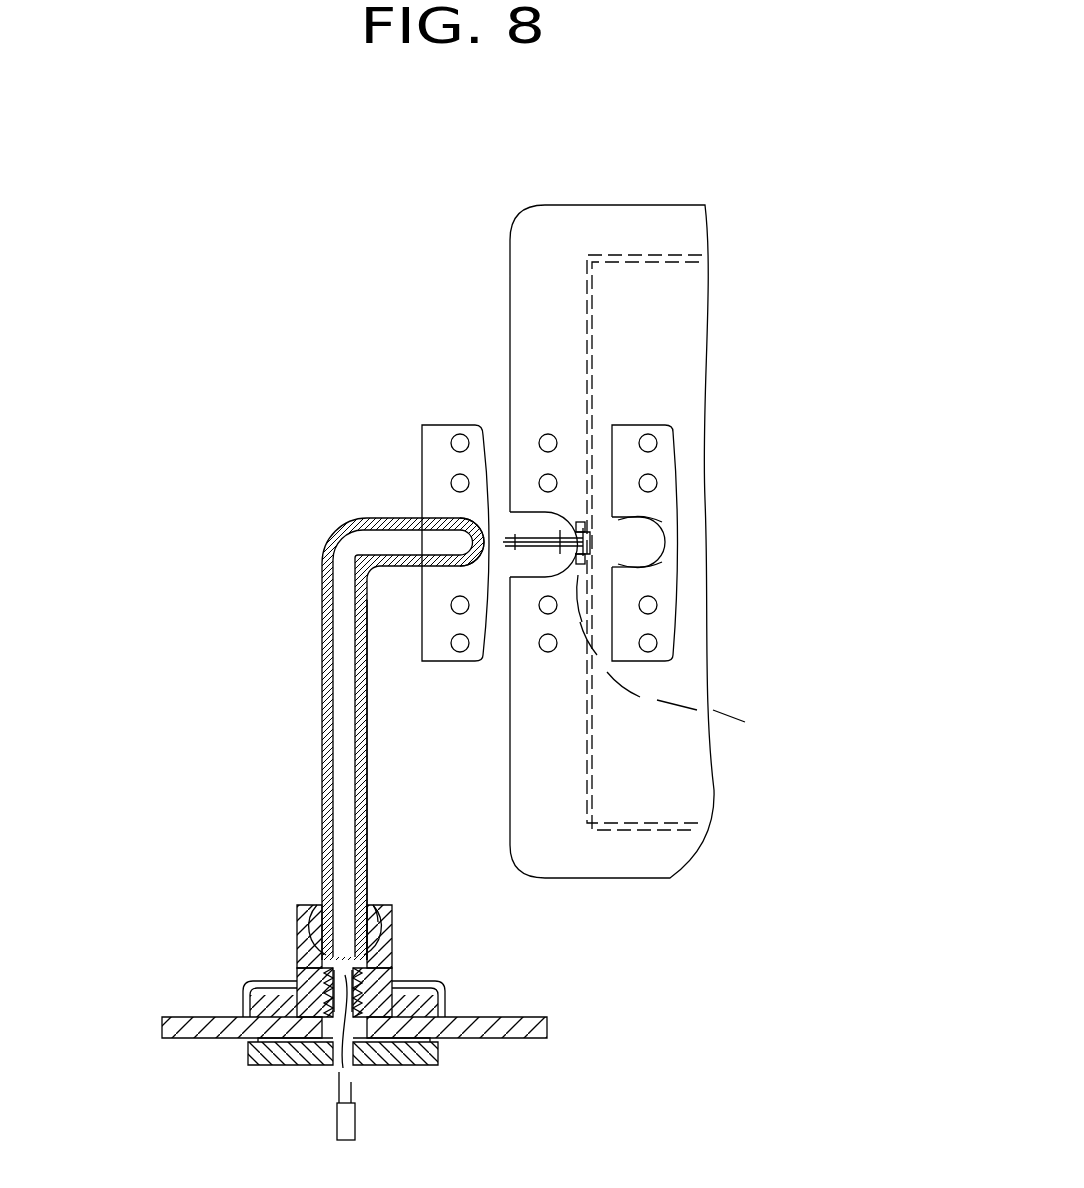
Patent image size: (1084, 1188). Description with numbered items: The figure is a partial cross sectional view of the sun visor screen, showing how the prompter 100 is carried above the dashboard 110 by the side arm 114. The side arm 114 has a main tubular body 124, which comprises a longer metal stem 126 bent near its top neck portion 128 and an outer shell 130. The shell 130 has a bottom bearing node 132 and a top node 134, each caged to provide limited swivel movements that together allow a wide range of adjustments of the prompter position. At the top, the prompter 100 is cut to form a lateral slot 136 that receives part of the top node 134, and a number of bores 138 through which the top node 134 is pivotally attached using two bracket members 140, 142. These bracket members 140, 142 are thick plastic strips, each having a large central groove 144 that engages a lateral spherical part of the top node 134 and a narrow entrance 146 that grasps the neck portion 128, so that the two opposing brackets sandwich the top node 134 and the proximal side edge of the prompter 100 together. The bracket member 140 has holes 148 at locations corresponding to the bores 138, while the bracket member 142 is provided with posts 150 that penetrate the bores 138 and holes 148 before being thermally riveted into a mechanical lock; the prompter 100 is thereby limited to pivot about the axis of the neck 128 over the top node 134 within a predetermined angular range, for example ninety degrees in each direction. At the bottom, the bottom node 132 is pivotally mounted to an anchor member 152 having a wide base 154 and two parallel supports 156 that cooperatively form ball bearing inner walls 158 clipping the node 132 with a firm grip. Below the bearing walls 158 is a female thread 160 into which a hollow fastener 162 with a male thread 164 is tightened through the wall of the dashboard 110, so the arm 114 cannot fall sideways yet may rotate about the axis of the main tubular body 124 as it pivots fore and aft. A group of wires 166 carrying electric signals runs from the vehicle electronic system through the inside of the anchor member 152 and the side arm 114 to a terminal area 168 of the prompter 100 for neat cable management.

The prompter 100 is at (513, 257).
The dashboard 110 is at (547, 1017).
The side arm 114 is at (272, 688).
The main tubular body 124 is at (320, 697).
The metal stem 126 is at (360, 725).
The top neck portion 128 is at (345, 537).
The outer shell 130 is at (368, 830).
The bottom bearing node 132 is at (372, 946).
The top node 134 is at (448, 572).
The lateral slot 136 is at (507, 513).
The bores 138 is at (547, 436).
The bracket member 140 is at (425, 440).
The bracket member 142 is at (668, 467).
The central groove 144 is at (633, 517).
The narrow entrance 146 is at (620, 560).
The holes 148 is at (460, 443).
The posts 150 is at (648, 440).
The anchor member 152 is at (285, 945).
The base 154 is at (250, 988).
The supports 156 is at (312, 905).
The ball bearing inner walls 158 is at (375, 912).
The female thread 160 is at (341, 1015).
The hollow fastener 162 is at (430, 1065).
The male thread 164 is at (445, 998).
The wires 166 is at (358, 1120).
The terminal area 168 is at (768, 662).